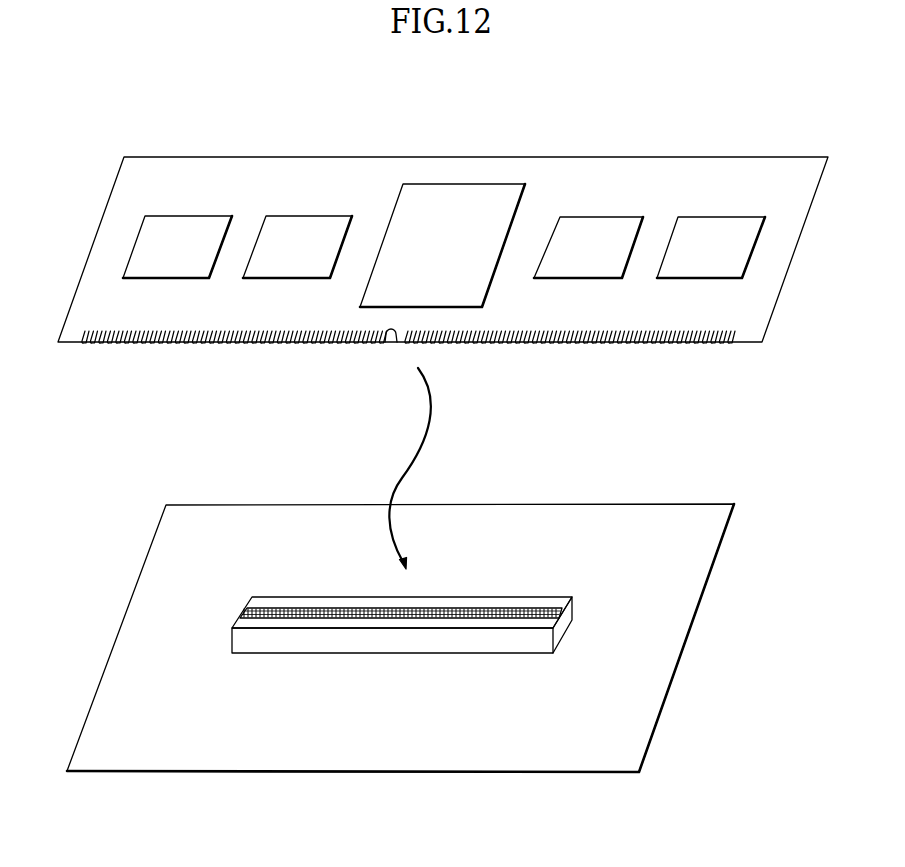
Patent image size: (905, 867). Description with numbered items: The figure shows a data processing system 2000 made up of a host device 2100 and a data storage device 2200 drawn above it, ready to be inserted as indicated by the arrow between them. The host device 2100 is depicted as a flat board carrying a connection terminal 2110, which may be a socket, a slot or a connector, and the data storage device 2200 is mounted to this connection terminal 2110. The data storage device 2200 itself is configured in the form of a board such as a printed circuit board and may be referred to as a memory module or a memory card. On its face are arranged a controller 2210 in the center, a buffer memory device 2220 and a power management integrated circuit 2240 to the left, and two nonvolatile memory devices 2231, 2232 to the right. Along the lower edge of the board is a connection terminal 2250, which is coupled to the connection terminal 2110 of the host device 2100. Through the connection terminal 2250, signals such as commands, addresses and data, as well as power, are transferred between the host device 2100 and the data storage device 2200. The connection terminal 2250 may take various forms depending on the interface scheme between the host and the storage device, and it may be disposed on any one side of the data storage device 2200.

The data processing system 2000 is at (100, 116).
The host device 2100 is at (400, 638).
The connection terminal 2110 is at (573, 604).
The data storage device 2200 is at (443, 274).
The controller 2210 is at (442, 245).
The buffer memory device 2220 is at (297, 247).
The nonvolatile memory device 2231 is at (588, 247).
The nonvolatile memory device 2232 is at (711, 247).
The power management integrated circuit 2240 is at (177, 247).
The connection terminal 2250 is at (107, 335).